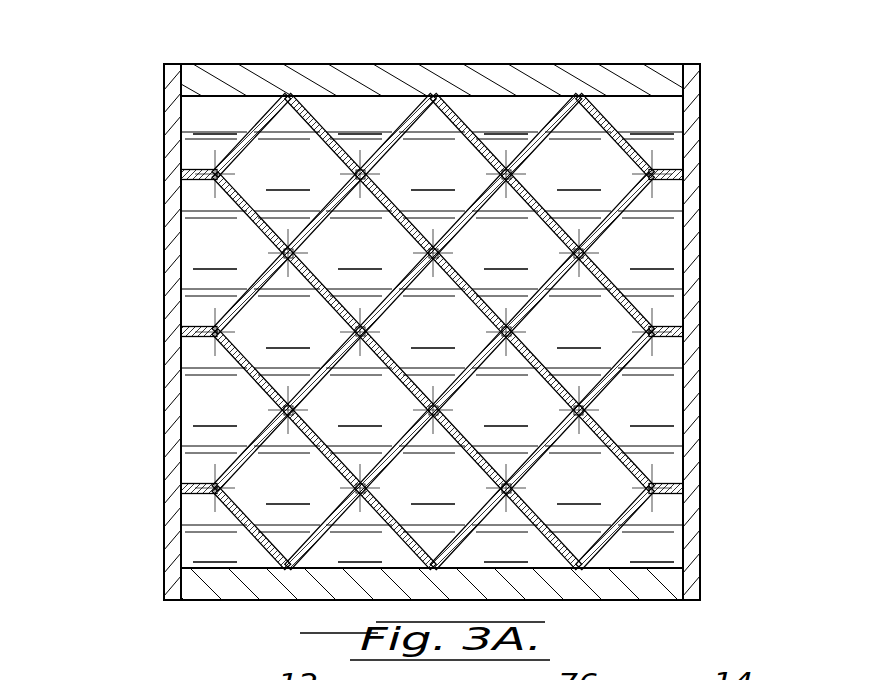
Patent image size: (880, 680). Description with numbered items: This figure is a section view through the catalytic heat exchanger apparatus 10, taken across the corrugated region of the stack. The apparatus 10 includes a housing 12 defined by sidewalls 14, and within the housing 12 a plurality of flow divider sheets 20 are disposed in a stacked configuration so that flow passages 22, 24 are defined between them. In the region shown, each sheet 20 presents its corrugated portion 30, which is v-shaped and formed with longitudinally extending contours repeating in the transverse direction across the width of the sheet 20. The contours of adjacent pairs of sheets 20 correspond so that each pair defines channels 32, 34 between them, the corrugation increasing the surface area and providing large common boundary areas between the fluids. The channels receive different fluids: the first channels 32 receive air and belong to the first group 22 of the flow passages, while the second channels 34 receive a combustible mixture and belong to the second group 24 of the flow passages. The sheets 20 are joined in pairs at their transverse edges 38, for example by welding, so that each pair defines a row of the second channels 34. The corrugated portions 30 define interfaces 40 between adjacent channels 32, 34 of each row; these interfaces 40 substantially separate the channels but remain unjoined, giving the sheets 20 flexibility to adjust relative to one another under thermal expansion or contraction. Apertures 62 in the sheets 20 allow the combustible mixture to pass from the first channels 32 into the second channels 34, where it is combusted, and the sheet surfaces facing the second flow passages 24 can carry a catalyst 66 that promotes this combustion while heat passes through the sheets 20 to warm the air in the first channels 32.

The apparatus 10 is at (134, 46).
The housing 12 is at (293, 60).
The sidewalls 14 is at (423, 326).
The flow divider sheets 20 is at (604, 118).
The first group of flow passages 22 is at (196, 139).
The second group of flow passages 24 is at (226, 192).
The corrugated portion 30 is at (276, 126).
The first channels 32 is at (433, 333).
The second channels 34 is at (433, 332).
The transverse edges 38 is at (185, 175).
The interfaces 40 is at (383, 170).
The apertures 62 is at (240, 308).
The catalyst 66 is at (327, 190).